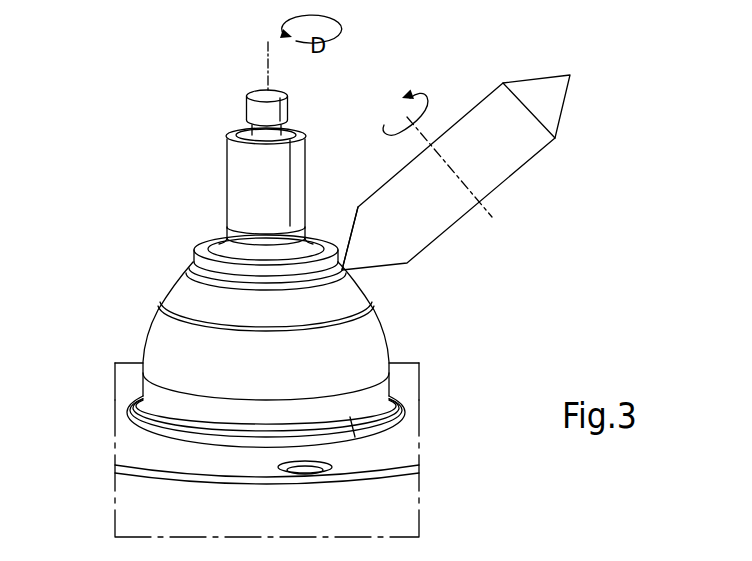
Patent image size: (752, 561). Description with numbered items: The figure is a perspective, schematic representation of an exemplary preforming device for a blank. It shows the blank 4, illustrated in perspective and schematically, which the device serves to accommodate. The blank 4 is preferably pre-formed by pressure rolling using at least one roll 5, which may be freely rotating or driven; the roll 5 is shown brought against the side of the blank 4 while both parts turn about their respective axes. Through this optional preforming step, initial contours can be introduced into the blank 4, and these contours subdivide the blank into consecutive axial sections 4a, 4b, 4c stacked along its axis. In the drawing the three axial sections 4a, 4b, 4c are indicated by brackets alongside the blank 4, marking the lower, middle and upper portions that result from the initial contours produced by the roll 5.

The blank 4 is at (175, 297).
The axial section 4a is at (100, 293).
The axial section 4b is at (100, 242).
The axial section 4c is at (100, 93).
The roll 5 is at (517, 147).